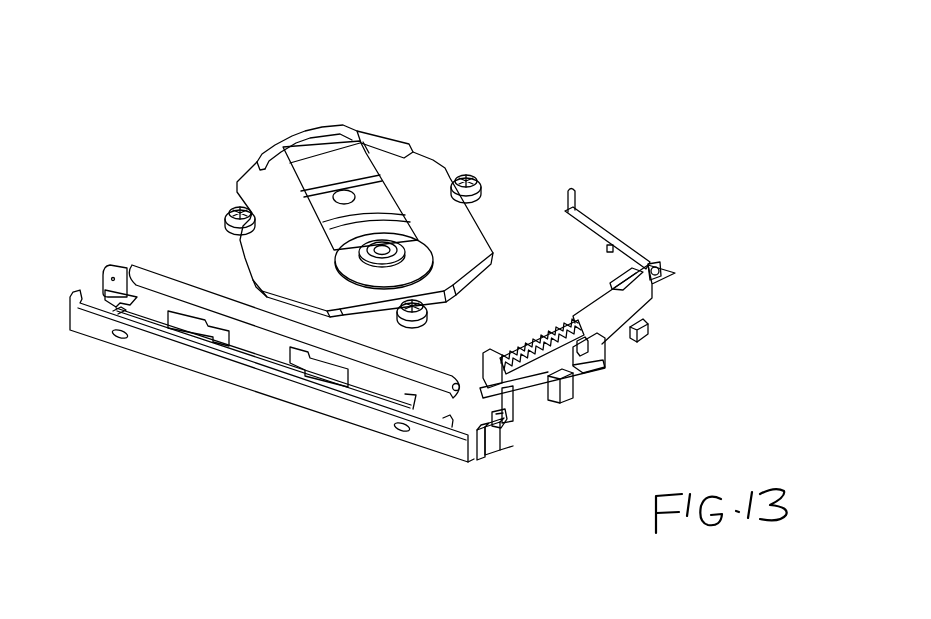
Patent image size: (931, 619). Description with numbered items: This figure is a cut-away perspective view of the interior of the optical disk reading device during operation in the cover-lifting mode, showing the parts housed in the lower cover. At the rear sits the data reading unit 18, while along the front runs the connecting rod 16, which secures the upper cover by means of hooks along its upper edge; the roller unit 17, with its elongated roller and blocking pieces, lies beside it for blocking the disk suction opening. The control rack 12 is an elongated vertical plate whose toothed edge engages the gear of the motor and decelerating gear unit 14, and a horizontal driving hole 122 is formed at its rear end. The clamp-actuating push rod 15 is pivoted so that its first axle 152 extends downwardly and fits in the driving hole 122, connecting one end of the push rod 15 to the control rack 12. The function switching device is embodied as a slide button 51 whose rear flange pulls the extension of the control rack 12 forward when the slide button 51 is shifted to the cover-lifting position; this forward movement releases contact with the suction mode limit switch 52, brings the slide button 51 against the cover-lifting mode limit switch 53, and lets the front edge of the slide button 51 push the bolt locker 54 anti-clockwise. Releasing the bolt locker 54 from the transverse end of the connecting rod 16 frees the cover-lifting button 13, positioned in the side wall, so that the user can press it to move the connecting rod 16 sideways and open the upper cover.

The control rack 12 is at (642, 303).
The cover-lifting button 13 is at (496, 452).
The motor and decelerating gear unit 14 is at (518, 327).
The clamp-actuating push rod 15 is at (607, 236).
The connecting rod 16 is at (165, 350).
The roller unit 17 is at (125, 290).
The data reading unit 18 is at (312, 138).
The slide button 51 is at (563, 392).
The suction mode limit switch 52 is at (648, 333).
The cover-lifting mode limit switch 53 is at (505, 440).
The bolt locker 54 is at (508, 418).
The driving hole 122 is at (660, 272).
The first axle 152 is at (656, 266).